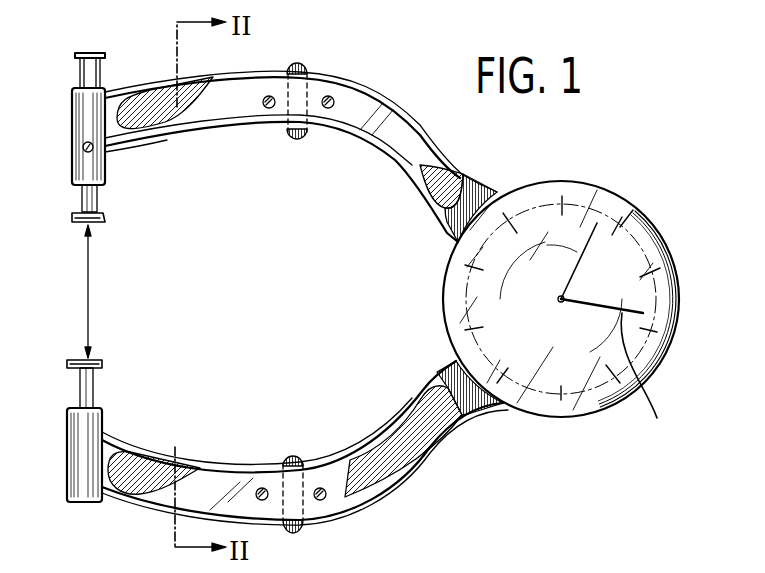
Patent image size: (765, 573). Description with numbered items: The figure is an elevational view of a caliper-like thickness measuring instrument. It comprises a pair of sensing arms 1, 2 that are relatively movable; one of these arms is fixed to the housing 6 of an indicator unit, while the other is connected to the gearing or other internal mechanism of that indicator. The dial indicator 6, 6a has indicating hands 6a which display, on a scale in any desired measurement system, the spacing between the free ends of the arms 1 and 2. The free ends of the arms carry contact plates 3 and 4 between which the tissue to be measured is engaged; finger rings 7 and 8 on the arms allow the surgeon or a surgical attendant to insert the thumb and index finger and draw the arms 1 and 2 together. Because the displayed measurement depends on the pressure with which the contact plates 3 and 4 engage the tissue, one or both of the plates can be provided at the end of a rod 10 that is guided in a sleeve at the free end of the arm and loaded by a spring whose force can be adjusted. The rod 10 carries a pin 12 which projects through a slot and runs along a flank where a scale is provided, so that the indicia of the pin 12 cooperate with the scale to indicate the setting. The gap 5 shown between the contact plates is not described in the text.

The sensing arm 1 is at (402, 150).
The sensing arm 2 is at (420, 425).
The contact plate 3 is at (100, 365).
The contact plate 4 is at (103, 218).
The measuring gap between contacts 5 is at (90, 283).
The housing of indicator unit 6 is at (482, 243).
The indicating hands 6a is at (657, 418).
The finger ring 7 is at (295, 456).
The finger ring 8 is at (300, 140).
The rod 10 is at (97, 195).
The pin 12 is at (97, 150).